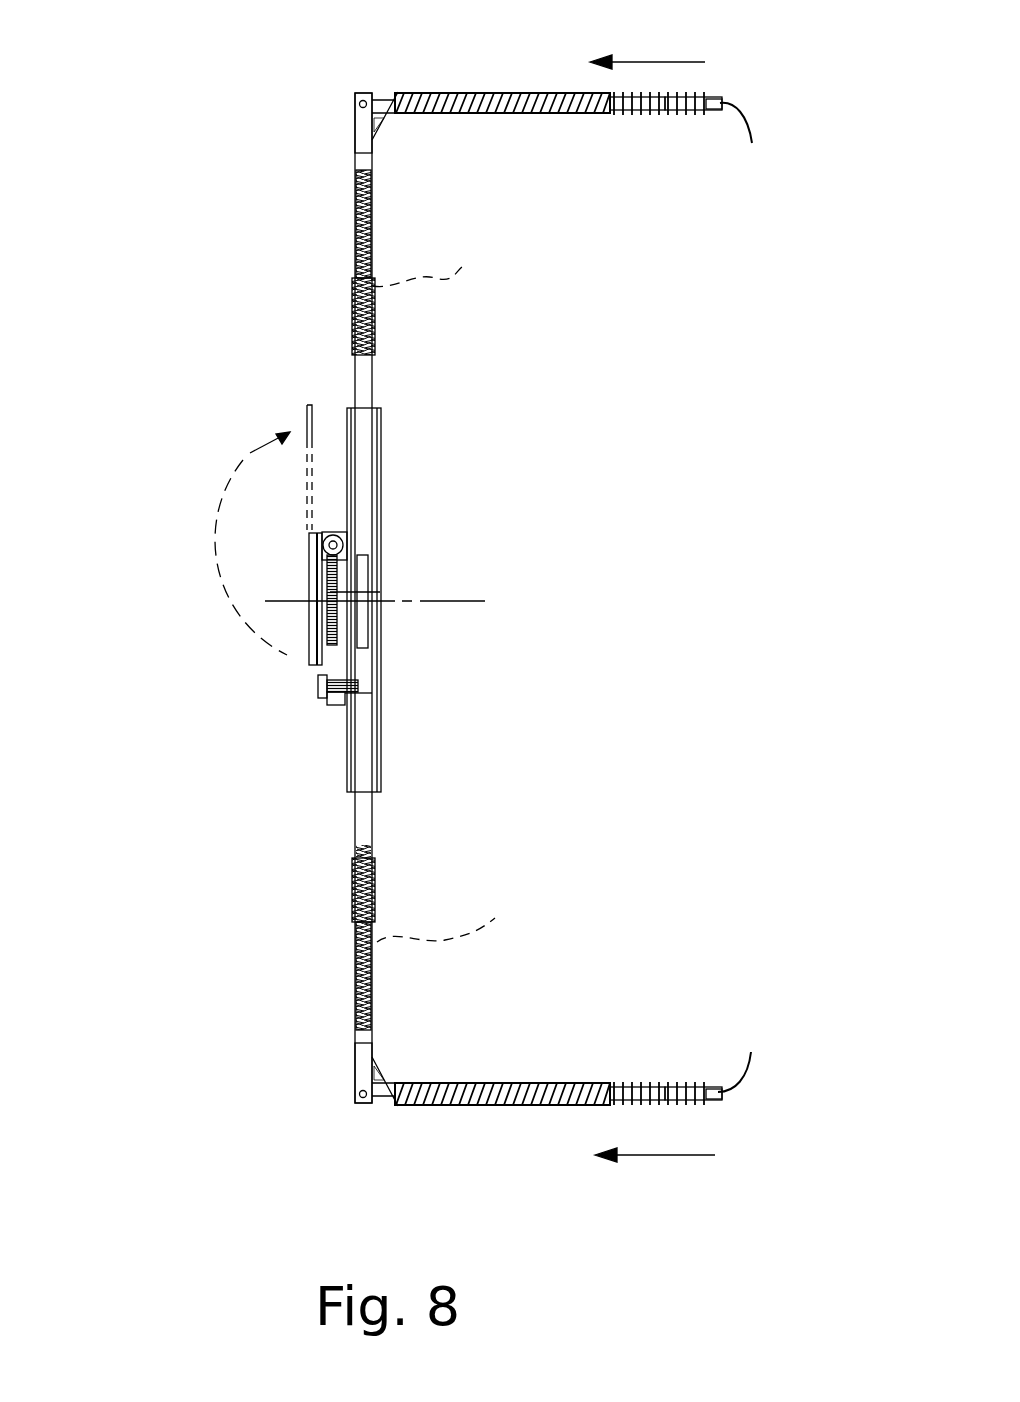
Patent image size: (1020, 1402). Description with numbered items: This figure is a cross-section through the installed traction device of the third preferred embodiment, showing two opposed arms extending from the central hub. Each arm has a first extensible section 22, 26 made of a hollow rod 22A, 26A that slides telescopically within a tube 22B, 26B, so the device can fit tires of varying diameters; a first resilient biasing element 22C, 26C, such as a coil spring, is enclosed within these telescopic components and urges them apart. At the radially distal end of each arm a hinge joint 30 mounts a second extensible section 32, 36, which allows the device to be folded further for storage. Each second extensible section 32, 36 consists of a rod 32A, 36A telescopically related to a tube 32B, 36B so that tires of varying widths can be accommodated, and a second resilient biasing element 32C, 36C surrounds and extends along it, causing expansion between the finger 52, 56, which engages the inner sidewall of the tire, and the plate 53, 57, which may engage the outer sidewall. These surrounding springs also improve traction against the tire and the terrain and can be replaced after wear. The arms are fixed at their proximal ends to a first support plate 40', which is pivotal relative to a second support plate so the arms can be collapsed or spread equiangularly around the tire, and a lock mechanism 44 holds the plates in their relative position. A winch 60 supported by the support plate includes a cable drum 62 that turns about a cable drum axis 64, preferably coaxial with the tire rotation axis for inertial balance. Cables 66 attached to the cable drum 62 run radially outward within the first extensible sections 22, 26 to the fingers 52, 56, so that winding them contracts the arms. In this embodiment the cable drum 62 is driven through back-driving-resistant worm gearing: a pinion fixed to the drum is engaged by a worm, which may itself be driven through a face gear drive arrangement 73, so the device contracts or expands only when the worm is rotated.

The first extensible section 22 is at (343, 262).
The hollow rod 22A is at (355, 240).
The tube 22B is at (355, 340).
The first resilient biasing element 22C is at (448, 264).
The first extensible section 26 is at (360, 937).
The hollow rod 26A is at (355, 987).
The tube 26B is at (355, 883).
The first resilient biasing element 26C is at (467, 916).
The hinge joint 30 is at (355, 130).
The second extensible section 32 is at (558, 125).
The rod 32A is at (681, 142).
The tube 32B is at (582, 113).
The second resilient biasing element 32C is at (462, 93).
The second extensible section 36 is at (558, 1062).
The rod 36A is at (647, 1085).
The tube 36B is at (556, 1085).
The second resilient biasing element 36C is at (482, 1108).
The first support plate 40' is at (436, 600).
The lock mechanism 44 is at (318, 683).
The finger 52 is at (750, 122).
The plate 53 is at (383, 125).
The finger 56 is at (748, 1076).
The plate 57 is at (383, 1063).
The winch 60 is at (288, 540).
The cable drum 62 is at (380, 570).
The cable drum axis 64 is at (420, 602).
The cable 66 is at (378, 100).
The face gear drive arrangement 73 is at (309, 643).